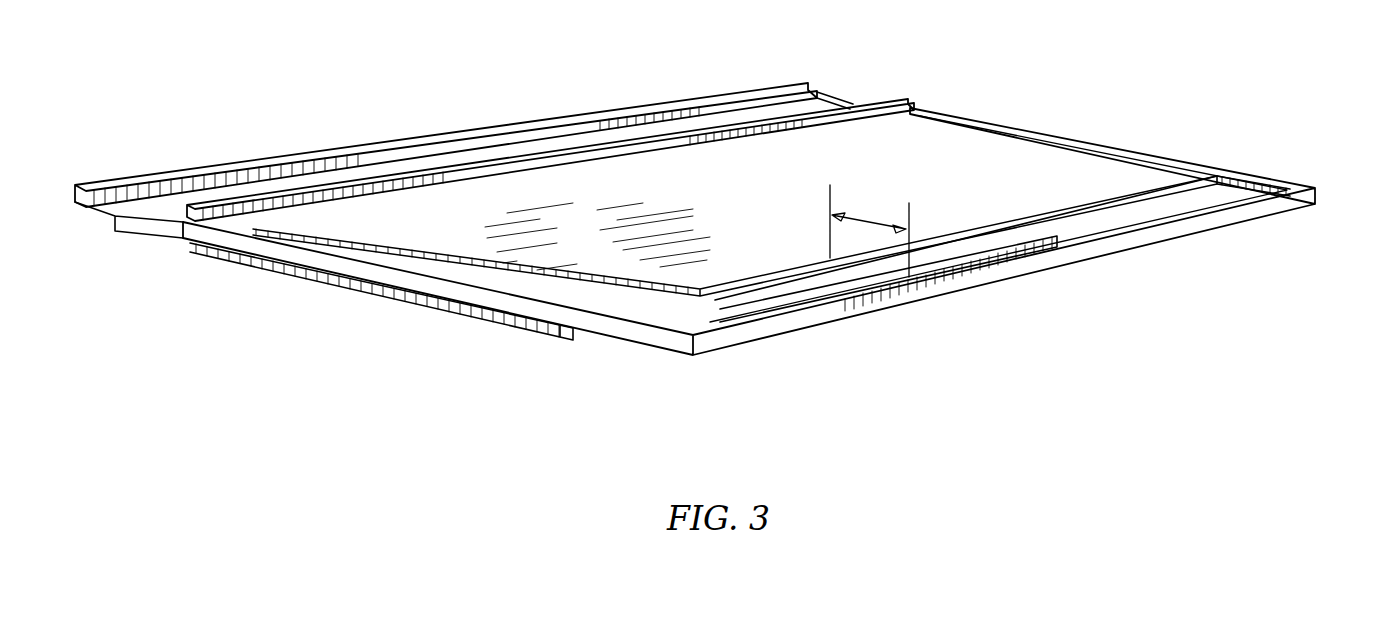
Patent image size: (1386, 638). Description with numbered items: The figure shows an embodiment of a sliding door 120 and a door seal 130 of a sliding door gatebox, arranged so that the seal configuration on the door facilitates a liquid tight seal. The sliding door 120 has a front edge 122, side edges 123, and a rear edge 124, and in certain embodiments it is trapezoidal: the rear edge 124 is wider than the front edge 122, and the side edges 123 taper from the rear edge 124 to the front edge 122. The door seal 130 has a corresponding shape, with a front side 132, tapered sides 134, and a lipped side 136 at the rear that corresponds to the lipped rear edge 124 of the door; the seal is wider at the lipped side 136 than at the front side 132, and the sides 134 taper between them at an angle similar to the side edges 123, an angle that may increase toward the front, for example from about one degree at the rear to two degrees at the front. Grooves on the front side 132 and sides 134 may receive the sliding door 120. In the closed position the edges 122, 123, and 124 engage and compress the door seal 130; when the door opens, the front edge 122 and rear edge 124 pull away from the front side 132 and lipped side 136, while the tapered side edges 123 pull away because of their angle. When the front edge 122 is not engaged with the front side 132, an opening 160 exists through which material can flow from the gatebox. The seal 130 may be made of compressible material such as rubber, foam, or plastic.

The sliding door 120 is at (730, 212).
The front edge 122 is at (720, 285).
The side edges 123 is at (98, 212).
The rear edge 124 is at (104, 183).
The door seal 130 is at (1303, 185).
The front side 132 is at (1083, 250).
The sides 134 is at (432, 287).
The lipped side 136 is at (908, 96).
The opening 160 is at (858, 213).